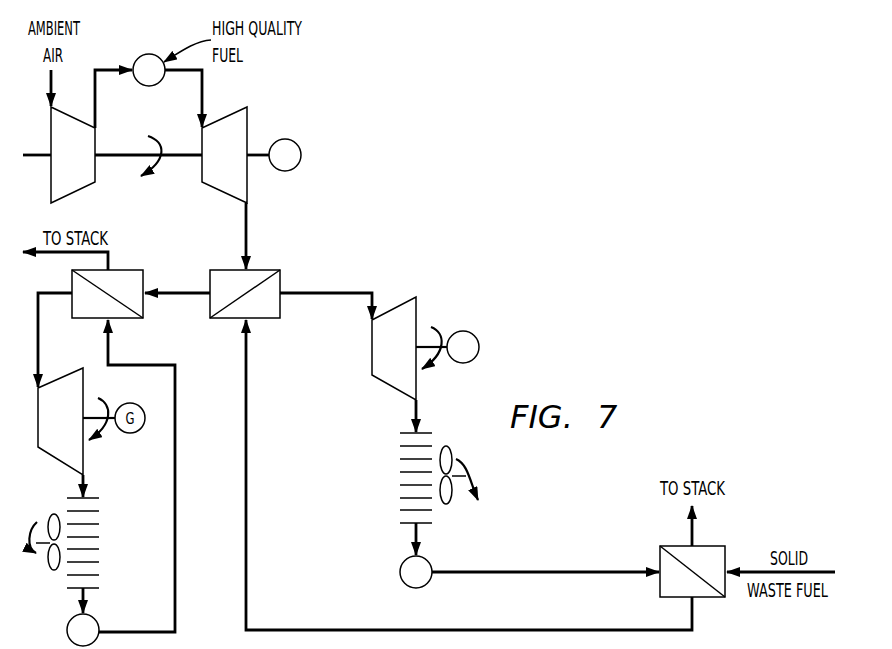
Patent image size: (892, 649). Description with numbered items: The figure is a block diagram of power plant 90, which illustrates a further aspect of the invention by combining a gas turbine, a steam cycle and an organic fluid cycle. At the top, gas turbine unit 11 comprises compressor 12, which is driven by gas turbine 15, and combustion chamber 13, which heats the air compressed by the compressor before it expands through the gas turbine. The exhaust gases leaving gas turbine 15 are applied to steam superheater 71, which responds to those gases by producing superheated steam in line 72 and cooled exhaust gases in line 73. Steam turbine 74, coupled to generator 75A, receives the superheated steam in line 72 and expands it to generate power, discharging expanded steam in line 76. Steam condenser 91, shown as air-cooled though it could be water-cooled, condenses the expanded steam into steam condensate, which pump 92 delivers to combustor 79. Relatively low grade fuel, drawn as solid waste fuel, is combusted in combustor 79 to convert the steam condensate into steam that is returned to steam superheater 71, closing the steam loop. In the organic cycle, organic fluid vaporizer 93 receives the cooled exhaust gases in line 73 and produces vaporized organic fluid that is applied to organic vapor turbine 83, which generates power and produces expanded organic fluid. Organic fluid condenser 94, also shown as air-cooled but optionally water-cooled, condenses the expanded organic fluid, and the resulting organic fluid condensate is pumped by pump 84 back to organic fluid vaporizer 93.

The gas turbine unit 11 is at (162, 128).
The compressor 12 is at (69, 109).
The combustion chamber 13 is at (150, 54).
The gas turbine 15 is at (244, 106).
The steam superheater 71 is at (281, 273).
The superheated steam line 72 is at (312, 295).
The cooled exhaust gas line 73 is at (182, 295).
The steam turbine 74 is at (410, 297).
The generator 75A is at (465, 331).
The expanded steam line 76 is at (416, 412).
The combustor 79 is at (720, 546).
The organic vapor turbine 83 is at (63, 373).
The pump 84 is at (99, 623).
The power plant 90 is at (429, 238).
The steam condenser 91 is at (390, 500).
The pump 92 is at (403, 584).
The organic fluid vaporizer 93 is at (143, 285).
The organic fluid condenser 94 is at (103, 519).